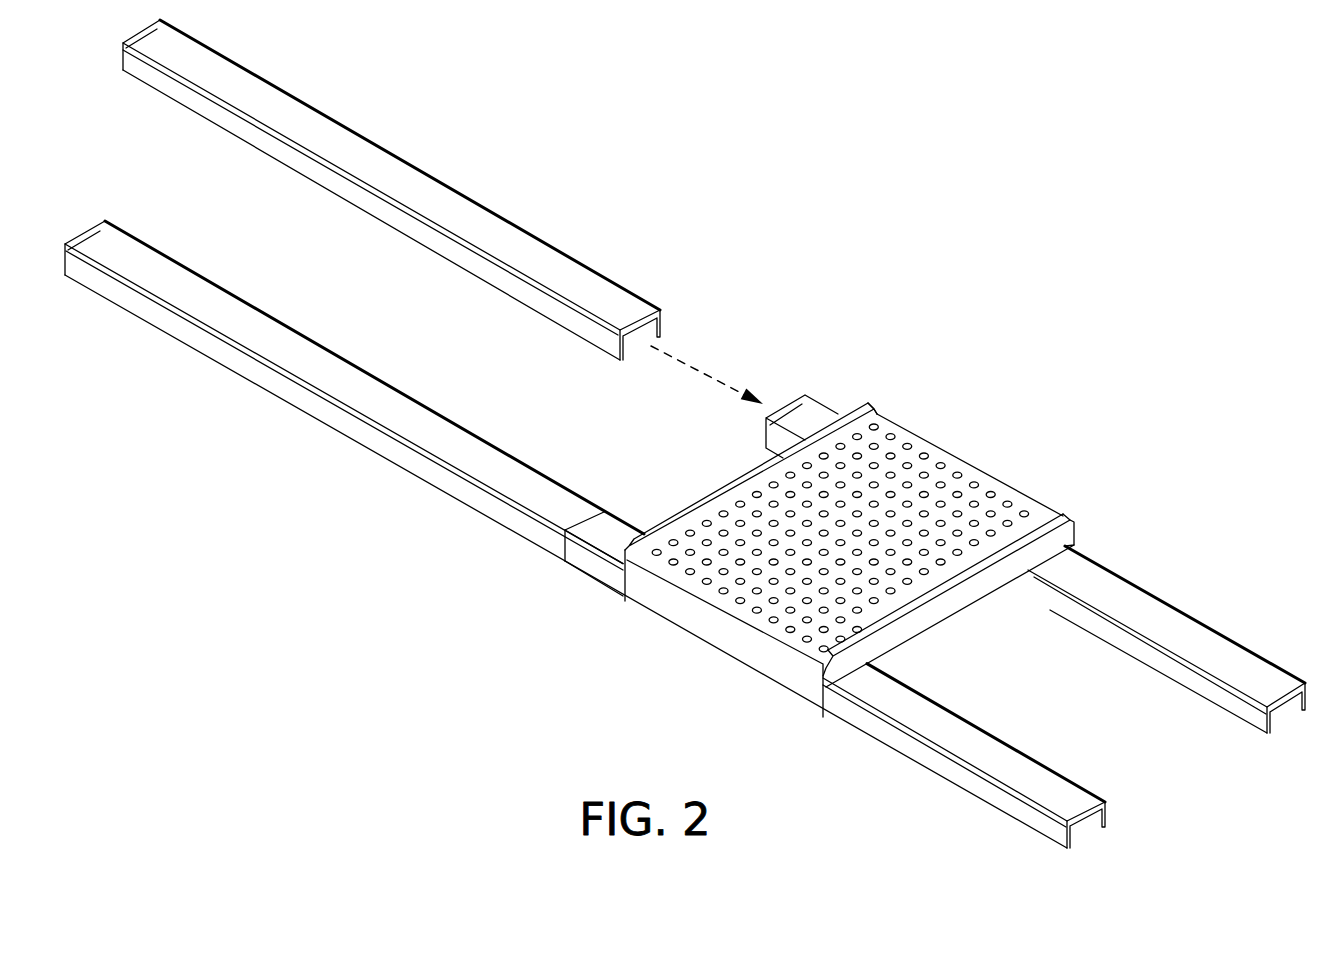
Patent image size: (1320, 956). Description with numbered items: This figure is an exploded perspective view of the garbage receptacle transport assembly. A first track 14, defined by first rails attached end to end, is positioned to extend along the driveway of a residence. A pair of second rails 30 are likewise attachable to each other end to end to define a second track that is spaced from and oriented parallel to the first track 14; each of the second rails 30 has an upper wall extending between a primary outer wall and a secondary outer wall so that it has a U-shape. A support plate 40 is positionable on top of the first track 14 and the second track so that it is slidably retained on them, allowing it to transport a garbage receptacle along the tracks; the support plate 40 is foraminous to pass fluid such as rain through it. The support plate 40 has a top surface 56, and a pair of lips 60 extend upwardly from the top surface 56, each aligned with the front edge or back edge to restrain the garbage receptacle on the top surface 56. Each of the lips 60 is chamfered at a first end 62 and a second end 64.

The first track 14 is at (513, 557).
The second rails 30 is at (653, 274).
The support plate 40 is at (864, 499).
The top surface 56 is at (723, 600).
The lips 60 is at (838, 414).
The first end 62 is at (628, 549).
The second end 64 is at (877, 417).